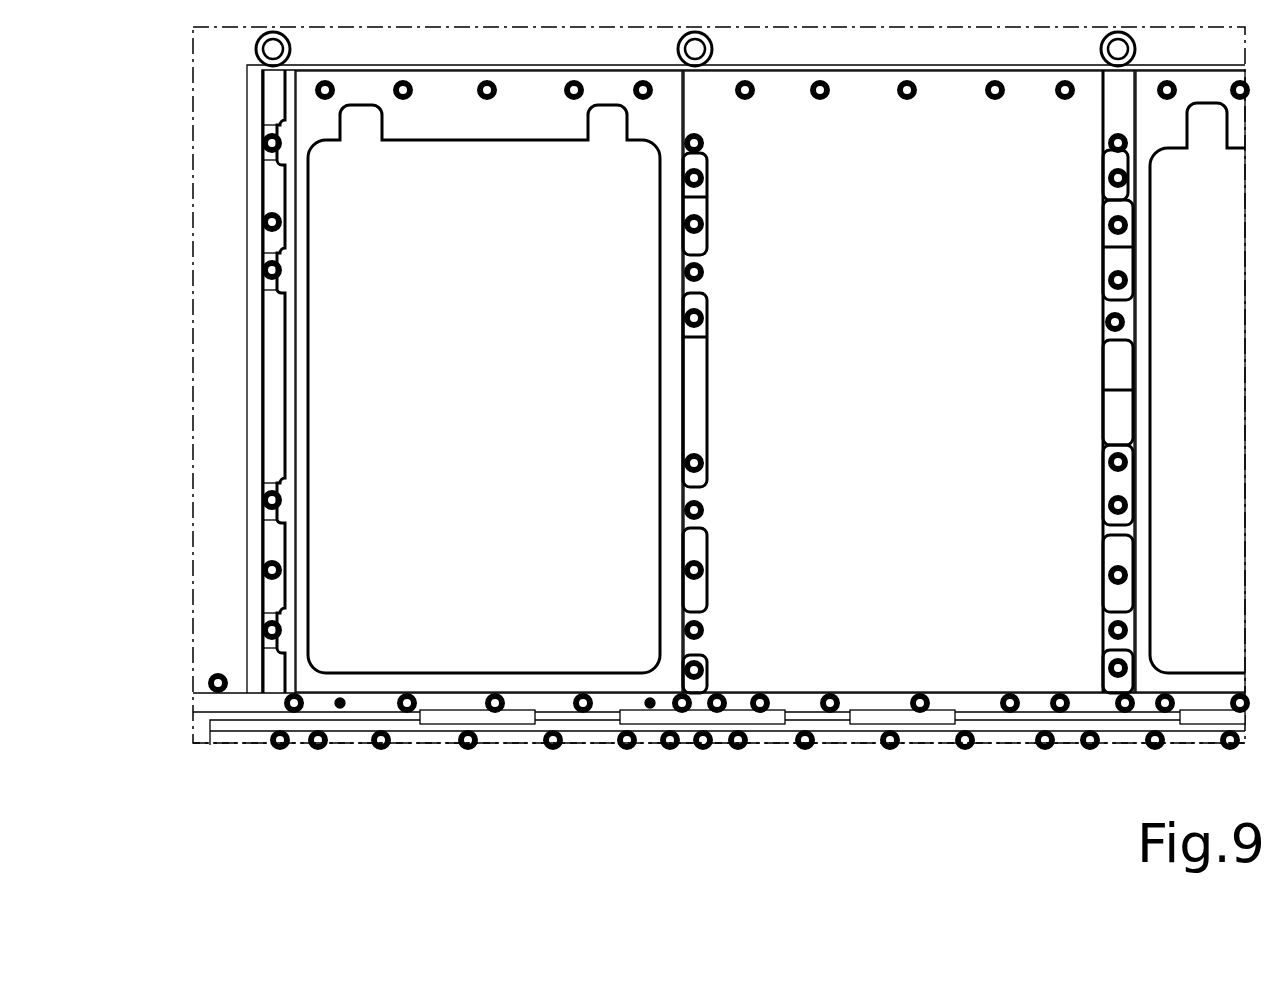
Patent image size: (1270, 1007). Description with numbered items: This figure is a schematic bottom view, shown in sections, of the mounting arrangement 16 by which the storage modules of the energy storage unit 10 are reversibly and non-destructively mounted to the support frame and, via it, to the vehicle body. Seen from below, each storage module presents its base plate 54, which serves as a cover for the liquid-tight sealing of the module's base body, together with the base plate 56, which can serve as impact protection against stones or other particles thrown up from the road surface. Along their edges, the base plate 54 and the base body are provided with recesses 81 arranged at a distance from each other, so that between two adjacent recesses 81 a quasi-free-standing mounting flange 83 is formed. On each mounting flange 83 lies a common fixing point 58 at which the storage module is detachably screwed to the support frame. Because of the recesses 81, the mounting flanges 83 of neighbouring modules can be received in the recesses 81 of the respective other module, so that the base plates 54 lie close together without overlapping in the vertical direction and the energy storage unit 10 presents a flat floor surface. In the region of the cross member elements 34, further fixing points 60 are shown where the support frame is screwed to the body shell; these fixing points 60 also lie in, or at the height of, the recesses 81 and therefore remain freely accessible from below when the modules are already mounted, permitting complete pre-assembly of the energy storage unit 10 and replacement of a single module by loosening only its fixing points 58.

The energy storage unit 10 is at (1008, 727).
The mounting arrangement 16 is at (717, 758).
The cross member element 34 is at (700, 395).
The base plate 54 is at (490, 128).
The base plate 56 is at (475, 385).
The fixing point 58 is at (262, 143).
The fixing point 60 is at (280, 222).
The recess 81 is at (268, 195).
The mounting flange 83 is at (262, 266).